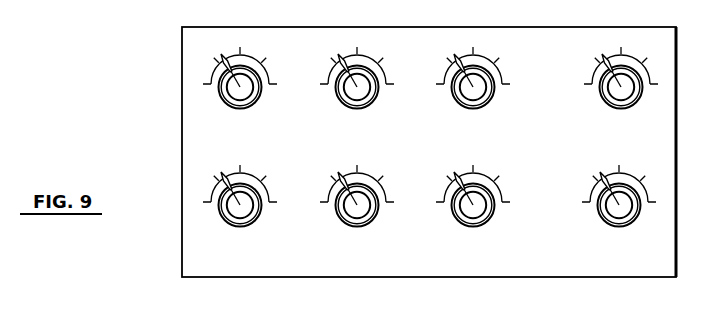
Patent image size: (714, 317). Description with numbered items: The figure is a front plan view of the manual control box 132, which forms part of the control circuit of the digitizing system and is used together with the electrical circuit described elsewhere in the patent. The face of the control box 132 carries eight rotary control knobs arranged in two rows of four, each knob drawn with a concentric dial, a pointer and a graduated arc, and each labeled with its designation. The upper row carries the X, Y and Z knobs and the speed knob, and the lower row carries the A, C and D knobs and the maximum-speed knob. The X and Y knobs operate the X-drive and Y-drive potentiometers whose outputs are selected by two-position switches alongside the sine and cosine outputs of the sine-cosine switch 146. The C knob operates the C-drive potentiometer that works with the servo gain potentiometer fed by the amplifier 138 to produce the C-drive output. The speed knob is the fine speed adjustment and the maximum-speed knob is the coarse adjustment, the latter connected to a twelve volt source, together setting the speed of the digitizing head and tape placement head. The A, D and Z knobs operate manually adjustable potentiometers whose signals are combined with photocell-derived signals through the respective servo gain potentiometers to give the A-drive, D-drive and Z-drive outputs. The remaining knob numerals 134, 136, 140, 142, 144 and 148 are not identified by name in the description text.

The manual control box 132 is at (396, 152).
The X axis knob (unnumbered in drawing, labeled X) 134 is at (240, 88).
The Y axis knob (labeled Y) 136 is at (357, 88).
The amplifier 138 is at (473, 88).
The speed knob (labeled SPD) 140 is at (621, 88).
The A axis knob (labeled A) 142 is at (240, 206).
The C axis knob (labeled C) 144 is at (357, 206).
The sine-cosine switch 146 is at (473, 206).
The manual speed knob (labeled M. SPD) 148 is at (619, 206).